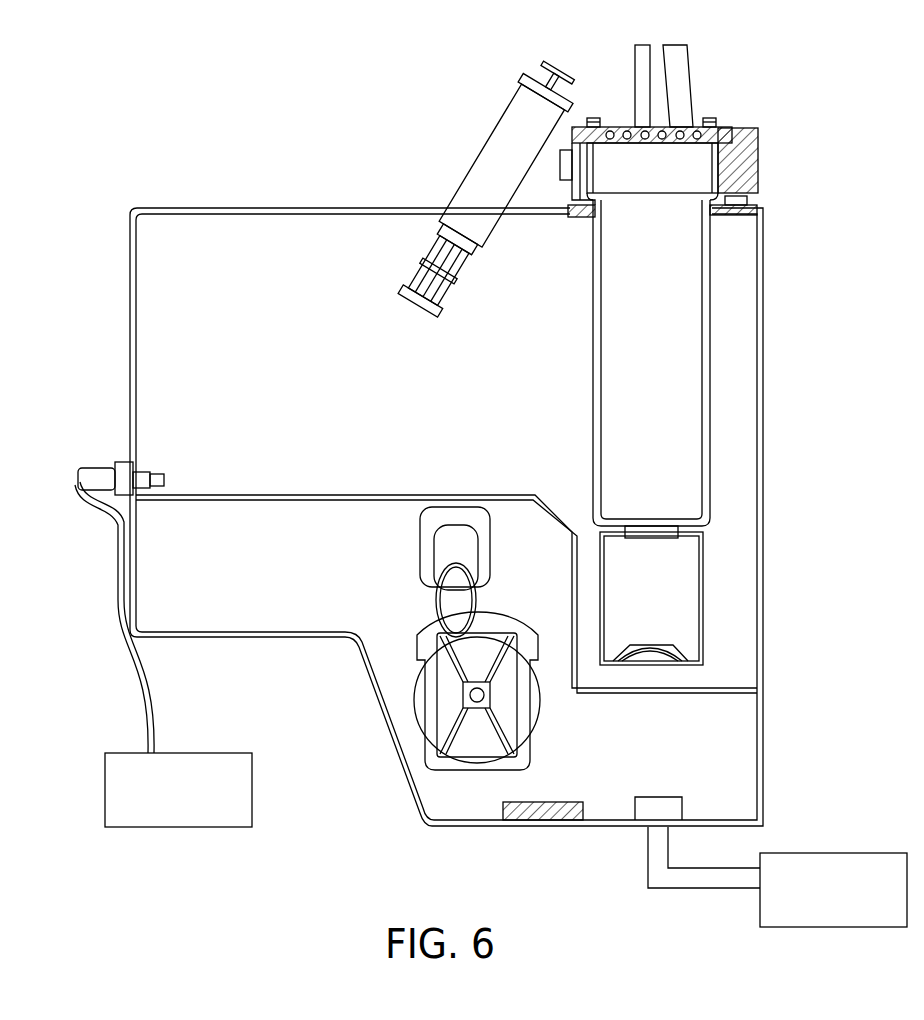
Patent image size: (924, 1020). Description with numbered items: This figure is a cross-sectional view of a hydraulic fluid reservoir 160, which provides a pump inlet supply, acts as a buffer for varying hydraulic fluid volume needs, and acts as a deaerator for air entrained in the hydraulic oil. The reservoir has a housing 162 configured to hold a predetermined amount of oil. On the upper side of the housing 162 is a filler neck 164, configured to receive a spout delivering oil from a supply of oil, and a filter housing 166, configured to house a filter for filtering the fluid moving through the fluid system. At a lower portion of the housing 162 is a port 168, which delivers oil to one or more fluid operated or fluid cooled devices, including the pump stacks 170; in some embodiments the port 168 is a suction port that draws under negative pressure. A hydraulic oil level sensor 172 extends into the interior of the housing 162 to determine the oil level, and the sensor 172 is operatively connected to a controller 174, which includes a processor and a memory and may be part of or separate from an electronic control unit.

The hydraulic fluid reservoir 160 is at (196, 186).
The housing 162 is at (154, 260).
The filler neck 164 is at (486, 172).
The filter housing 166 is at (697, 162).
The port 168 is at (460, 598).
The pump stacks 170 is at (760, 897).
The hydraulic oil level sensor 172 is at (124, 458).
The controller 174 is at (150, 828).